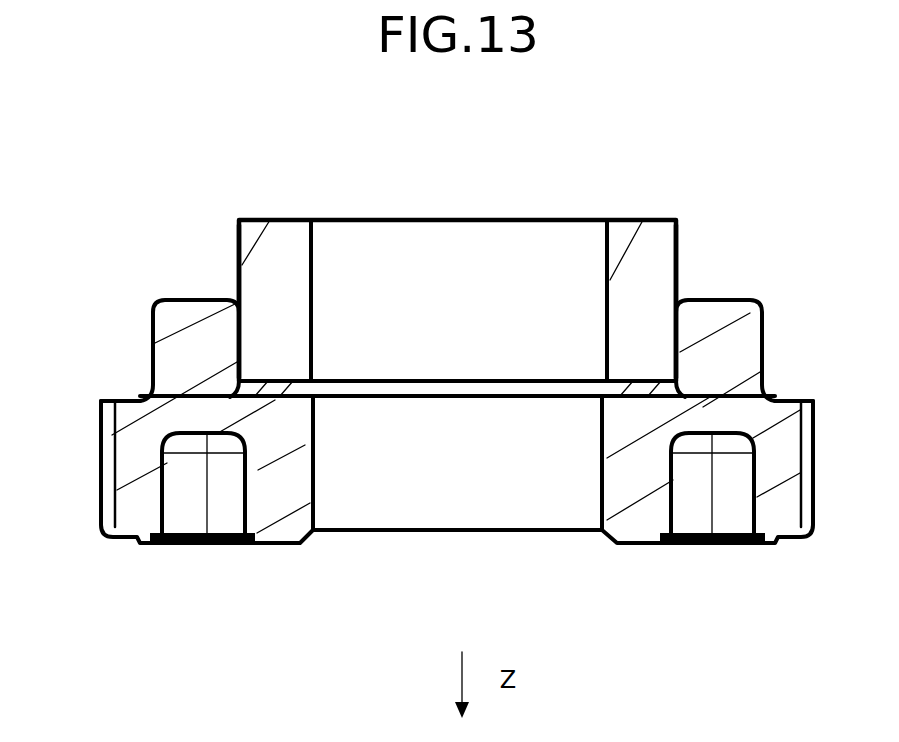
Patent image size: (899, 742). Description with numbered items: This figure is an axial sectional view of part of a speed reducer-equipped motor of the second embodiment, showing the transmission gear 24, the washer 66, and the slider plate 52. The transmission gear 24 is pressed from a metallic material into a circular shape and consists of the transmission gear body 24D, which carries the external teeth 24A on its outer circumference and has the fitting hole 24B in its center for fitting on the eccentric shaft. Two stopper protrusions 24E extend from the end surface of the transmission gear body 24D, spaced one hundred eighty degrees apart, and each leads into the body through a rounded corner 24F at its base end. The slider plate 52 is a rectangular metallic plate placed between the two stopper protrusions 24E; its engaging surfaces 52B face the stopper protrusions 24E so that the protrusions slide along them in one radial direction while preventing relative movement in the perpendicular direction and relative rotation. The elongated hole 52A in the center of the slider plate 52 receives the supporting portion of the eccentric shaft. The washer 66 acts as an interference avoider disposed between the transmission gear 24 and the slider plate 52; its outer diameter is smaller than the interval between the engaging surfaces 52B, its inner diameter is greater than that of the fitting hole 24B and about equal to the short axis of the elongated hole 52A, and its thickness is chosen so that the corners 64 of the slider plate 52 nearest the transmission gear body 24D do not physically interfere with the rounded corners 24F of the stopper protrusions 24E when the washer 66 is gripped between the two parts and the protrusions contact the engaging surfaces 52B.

The transmission gear 24 is at (657, 544).
The external teeth 24A is at (817, 495).
The fitting hole 24B is at (317, 492).
The transmission gear body 24D is at (625, 488).
The stopper protrusions 24E is at (182, 299).
The rounded corner 24F is at (250, 397).
The slider plate 52 is at (452, 219).
The elongated hole 52A is at (602, 250).
The engaging surfaces 52B is at (237, 328).
The corners 64 is at (242, 384).
The washer 66 is at (283, 398).